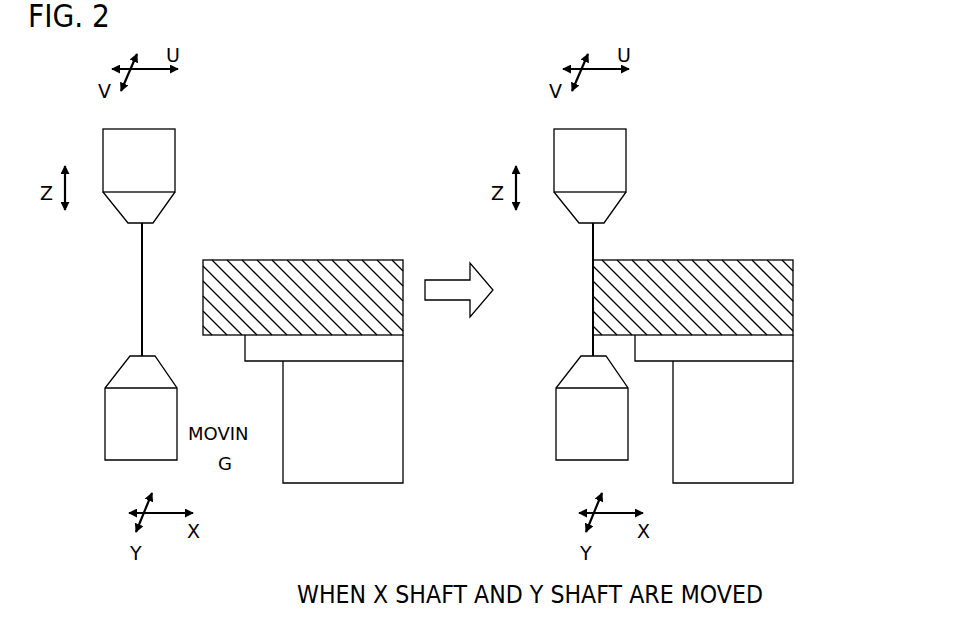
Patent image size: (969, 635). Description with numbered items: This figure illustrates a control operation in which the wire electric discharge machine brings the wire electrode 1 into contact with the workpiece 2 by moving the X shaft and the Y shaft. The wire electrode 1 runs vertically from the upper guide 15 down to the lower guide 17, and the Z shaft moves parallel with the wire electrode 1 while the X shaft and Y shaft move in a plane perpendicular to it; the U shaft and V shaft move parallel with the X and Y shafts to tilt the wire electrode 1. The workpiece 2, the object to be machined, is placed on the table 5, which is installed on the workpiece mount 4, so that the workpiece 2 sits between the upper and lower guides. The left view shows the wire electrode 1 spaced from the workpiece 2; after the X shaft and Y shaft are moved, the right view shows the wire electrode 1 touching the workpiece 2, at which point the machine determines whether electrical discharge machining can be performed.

The wire electrode 1 is at (139, 282).
The workpiece 2 is at (298, 260).
The workpiece mount 4 is at (365, 483).
The table 5 is at (403, 348).
The upper guide 15 is at (103, 131).
The lower guide 17 is at (110, 460).